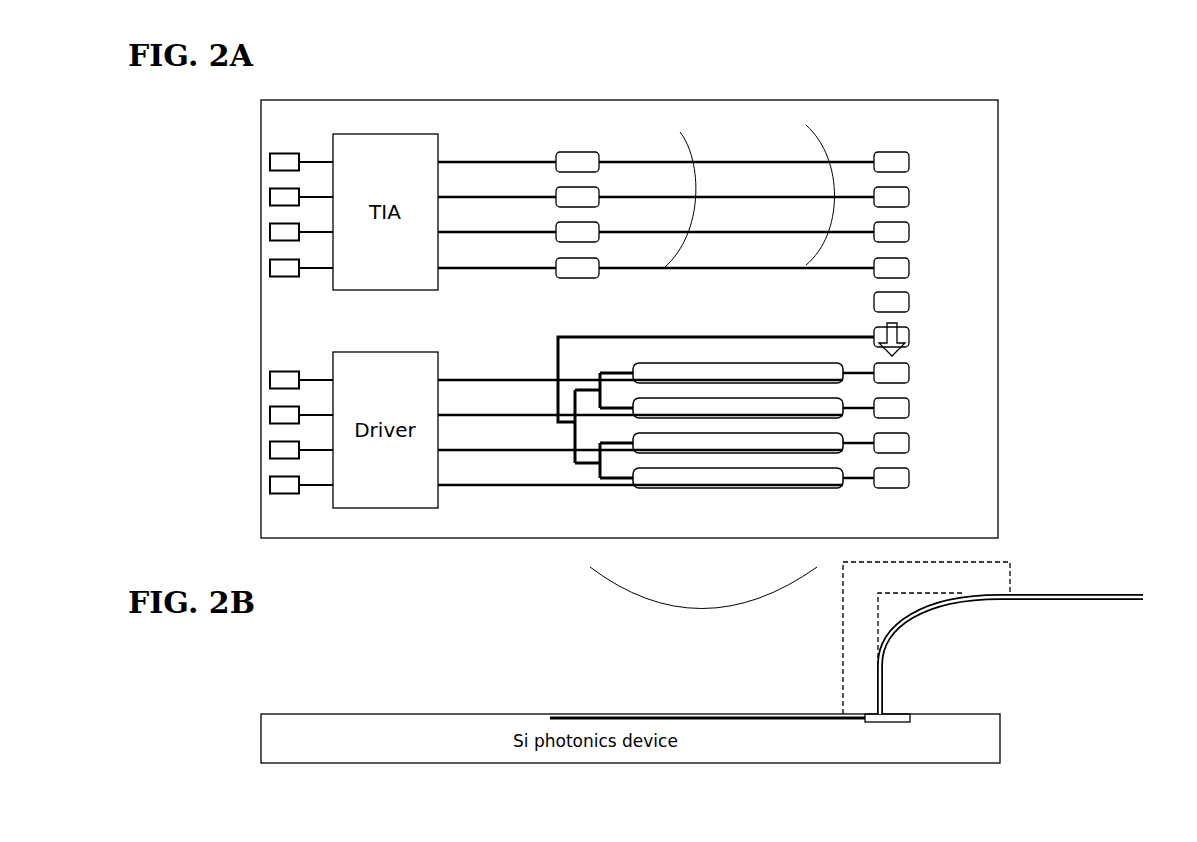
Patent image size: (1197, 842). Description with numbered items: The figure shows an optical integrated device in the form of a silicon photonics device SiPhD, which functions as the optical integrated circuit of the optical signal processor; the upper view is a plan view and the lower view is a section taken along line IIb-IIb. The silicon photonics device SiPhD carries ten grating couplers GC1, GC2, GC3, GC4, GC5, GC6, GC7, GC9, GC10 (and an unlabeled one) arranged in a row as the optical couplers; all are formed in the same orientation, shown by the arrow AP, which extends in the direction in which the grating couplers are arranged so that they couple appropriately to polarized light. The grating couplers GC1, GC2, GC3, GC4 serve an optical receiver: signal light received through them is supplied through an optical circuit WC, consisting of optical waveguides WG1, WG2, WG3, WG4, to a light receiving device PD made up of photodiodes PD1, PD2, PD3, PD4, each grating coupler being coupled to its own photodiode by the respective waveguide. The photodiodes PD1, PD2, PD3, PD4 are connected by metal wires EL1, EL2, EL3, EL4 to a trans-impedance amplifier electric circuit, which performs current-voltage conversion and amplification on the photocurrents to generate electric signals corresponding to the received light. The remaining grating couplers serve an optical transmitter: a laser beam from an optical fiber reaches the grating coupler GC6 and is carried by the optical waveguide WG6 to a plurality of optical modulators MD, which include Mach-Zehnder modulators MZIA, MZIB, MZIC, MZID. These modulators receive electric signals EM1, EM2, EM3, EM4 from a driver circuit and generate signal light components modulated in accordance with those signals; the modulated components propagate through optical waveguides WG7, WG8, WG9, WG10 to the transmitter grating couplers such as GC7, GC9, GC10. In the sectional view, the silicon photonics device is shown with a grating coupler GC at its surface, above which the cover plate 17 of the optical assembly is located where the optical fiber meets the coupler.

In FIG. 2A, the metal wire EL1 is at (477, 162).
In FIG. 2A, the metal wire EL2 is at (477, 197).
In FIG. 2A, the metal wire EL3 is at (477, 232).
In FIG. 2A, the metal wire EL4 is at (477, 268).
In FIG. 2A, the photodiode PD1 is at (598, 154).
In FIG. 2A, the photodiode PD2 is at (598, 189).
In FIG. 2A, the photodiode PD3 is at (598, 224).
In FIG. 2A, the photodiode PD4 is at (598, 260).
In FIG. 2A, the light receiving device PD is at (687, 189).
In FIG. 2A, the optical waveguide WG1 is at (742, 162).
In FIG. 2A, the optical waveguide WG2 is at (742, 197).
In FIG. 2A, the optical waveguide WG3 is at (742, 232).
In FIG. 2A, the optical waveguide WG4 is at (742, 268).
In FIG. 2A, the optical circuit WC is at (829, 188).
In FIG. 2A, the grating coupler GC1 is at (910, 162).
In FIG. 2A, the grating coupler GC2 is at (910, 197).
In FIG. 2A, the grating coupler GC3 is at (910, 232).
In FIG. 2A, the grating coupler GC4 is at (910, 268).
In FIG. 2A, the grating coupler GC5 is at (910, 302).
In FIG. 2A, the grating coupler GC6 is at (910, 337).
In FIG. 2A, the grating coupler GC7 is at (910, 373).
In FIG. 2A, the grating coupler GC9 is at (910, 408).
In FIG. 2A, the grating coupler GC10 is at (910, 478).
In FIG. 2A, the optical waveguide WG6 is at (783, 336).
In FIG. 2A, the optical waveguide WG7 is at (866, 368).
In FIG. 2A, the optical waveguide WG8 is at (862, 403).
In FIG. 2A, the optical waveguide WG9 is at (862, 440).
In FIG. 2A, the optical waveguide WG10 is at (862, 489).
In FIG. 2A, the arrow AP is at (892, 323).
In FIG. 2A, the electric signal EM1 is at (477, 380).
In FIG. 2A, the electric signal EM2 is at (477, 415).
In FIG. 2A, the electric signal EM3 is at (477, 450).
In FIG. 2A, the electric signal EM4 is at (477, 485).
In FIG. 2A, the Mach-Zehnder modulator MZIA is at (655, 376).
In FIG. 2A, the Mach-Zehnder modulator MZIB is at (680, 410).
In FIG. 2A, the Mach-Zehnder modulator MZIC is at (725, 445).
In FIG. 2A, the Mach-Zehnder modulator MZID is at (772, 480).
In FIG. 2A, the optical modulators MD is at (703, 601).
In FIG. 2A, the section line IIb is at (253, 337).
In FIG. 2A, the silicon photonics device SiPhD is at (1047, 142).
In FIG. 2B, the grating coupler GC is at (887, 736).
In FIG. 2B, the cover plate 17 is at (1010, 560).